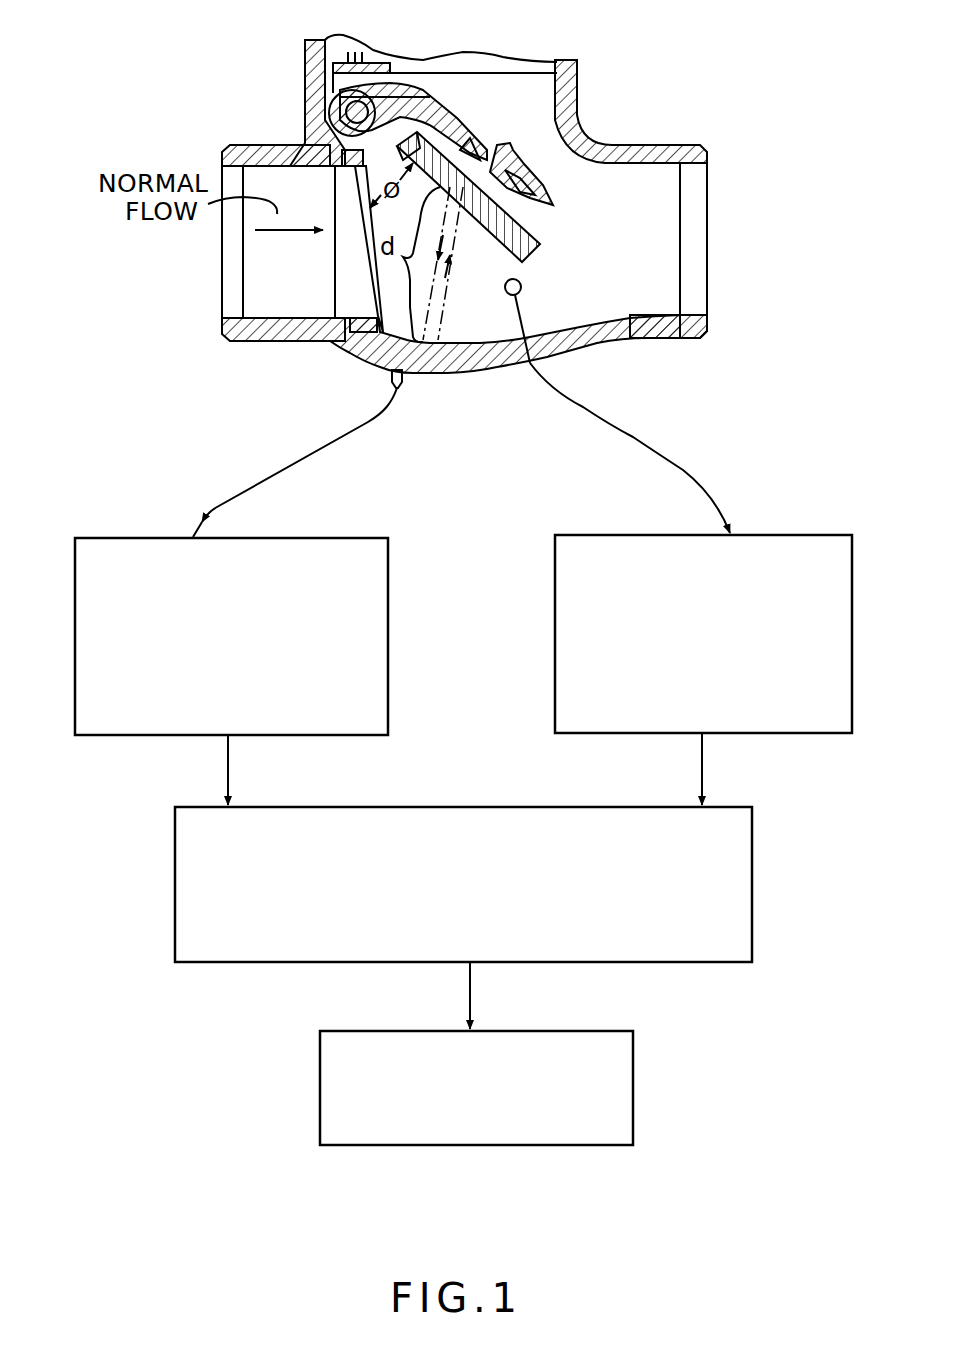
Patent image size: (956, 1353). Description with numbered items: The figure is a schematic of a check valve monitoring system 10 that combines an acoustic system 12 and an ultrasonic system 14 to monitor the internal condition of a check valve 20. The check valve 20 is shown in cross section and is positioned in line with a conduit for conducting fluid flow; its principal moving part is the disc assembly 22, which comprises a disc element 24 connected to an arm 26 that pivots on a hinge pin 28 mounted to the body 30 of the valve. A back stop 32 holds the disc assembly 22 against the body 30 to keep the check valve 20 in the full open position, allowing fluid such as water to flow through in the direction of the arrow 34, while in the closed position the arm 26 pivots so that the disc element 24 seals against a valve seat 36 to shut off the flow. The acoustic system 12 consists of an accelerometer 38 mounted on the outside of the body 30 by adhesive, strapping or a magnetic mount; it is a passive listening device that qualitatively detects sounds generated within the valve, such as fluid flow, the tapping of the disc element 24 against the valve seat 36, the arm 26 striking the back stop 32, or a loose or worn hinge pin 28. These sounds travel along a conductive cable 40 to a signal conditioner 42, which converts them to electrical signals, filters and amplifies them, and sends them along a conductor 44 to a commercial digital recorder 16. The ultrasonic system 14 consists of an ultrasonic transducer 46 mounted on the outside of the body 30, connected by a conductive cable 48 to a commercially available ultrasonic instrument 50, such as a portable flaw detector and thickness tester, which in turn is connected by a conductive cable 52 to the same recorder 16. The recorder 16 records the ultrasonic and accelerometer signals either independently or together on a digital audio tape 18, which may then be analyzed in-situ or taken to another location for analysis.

The check valve monitoring system 10 is at (757, 280).
The acoustic system 12 is at (724, 585).
The ultrasonic system 14 is at (209, 588).
The commercial digital recorder 16 is at (752, 865).
The digital audio tape 18 is at (633, 1056).
The check valve 20 is at (476, 213).
The disc assembly 22 is at (538, 207).
The disc element 24 is at (530, 248).
The arm 26 is at (452, 102).
The hinge pin 28 is at (305, 75).
The body 30 is at (330, 105).
The back stop 32 is at (598, 140).
The arrow 34 is at (280, 233).
The valve seat 36 is at (345, 348).
The accelerometer 38 is at (525, 298).
The conductive cable 40 is at (632, 440).
The signal conditioner 42 is at (852, 656).
The conductor 44 is at (702, 768).
The ultrasonic transducer 46 is at (410, 372).
The conductive cable 48 is at (288, 462).
The ultrasonic instrument 50 is at (75, 660).
The conductive cable 52 is at (228, 768).